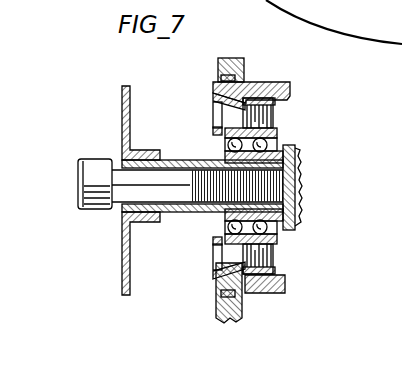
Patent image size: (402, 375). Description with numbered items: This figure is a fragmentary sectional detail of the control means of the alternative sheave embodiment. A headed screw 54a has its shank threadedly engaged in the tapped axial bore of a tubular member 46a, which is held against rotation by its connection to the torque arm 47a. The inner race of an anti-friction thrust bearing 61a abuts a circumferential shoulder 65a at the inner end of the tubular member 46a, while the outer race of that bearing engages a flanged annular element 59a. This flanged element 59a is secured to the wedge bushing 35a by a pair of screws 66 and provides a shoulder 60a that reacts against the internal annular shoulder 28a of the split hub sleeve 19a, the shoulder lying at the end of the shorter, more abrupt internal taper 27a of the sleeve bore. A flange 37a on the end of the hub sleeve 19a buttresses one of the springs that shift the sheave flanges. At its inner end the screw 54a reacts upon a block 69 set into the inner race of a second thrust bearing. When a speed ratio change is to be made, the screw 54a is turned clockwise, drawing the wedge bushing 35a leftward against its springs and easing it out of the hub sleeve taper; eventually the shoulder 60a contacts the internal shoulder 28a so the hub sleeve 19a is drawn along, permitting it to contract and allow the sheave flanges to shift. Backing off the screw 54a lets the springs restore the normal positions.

The split hub sleeve 19a is at (290, 89).
The internal taper 27a is at (216, 284).
The internal annular shoulder 28a is at (240, 95).
The wedge bushing 35a is at (214, 99).
The flange 37a is at (232, 321).
The tubular member 46a is at (181, 161).
The torque arm 47a is at (122, 268).
The headed screw 54a is at (79, 183).
The flanged annular element 59a is at (272, 268).
The shoulder 60a is at (272, 108).
The anti-friction thrust bearing 61a is at (283, 236).
The circumferential shoulder 65a is at (296, 152).
The screws 66 is at (214, 118).
The block 69 is at (301, 186).